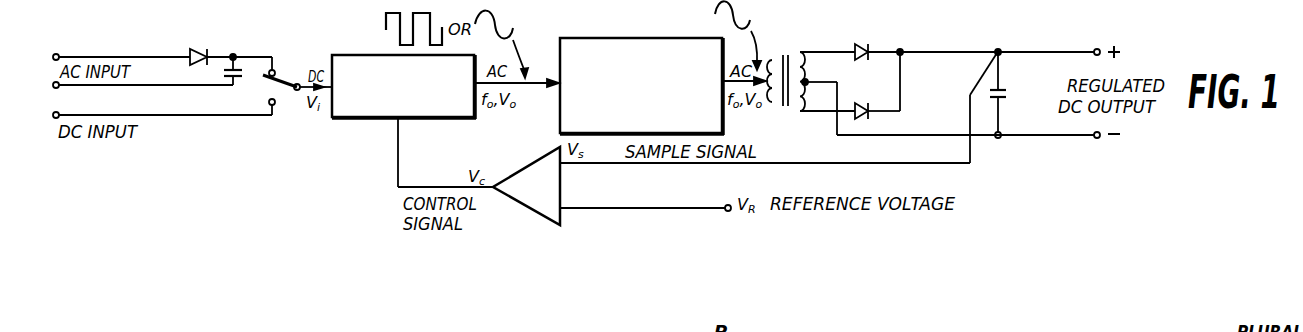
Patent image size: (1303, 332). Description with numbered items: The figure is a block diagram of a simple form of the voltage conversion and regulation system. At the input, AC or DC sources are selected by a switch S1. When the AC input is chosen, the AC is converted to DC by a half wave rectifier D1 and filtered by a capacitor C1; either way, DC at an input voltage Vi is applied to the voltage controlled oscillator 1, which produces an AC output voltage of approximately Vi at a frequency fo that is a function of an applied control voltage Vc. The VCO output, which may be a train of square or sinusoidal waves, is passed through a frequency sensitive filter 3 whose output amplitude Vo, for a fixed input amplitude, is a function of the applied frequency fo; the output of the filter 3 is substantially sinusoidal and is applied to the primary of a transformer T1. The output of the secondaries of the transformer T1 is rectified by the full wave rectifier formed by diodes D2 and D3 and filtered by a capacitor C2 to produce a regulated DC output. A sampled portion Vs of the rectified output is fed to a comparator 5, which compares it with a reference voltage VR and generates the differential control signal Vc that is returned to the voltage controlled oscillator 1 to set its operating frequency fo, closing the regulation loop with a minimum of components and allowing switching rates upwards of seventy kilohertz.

The voltage controlled oscillator 1 is at (358, 55).
The frequency sensitive filter 3 is at (559, 43).
The comparator 5 is at (524, 172).
The half wave rectifier D1 is at (199, 47).
The capacitor C1 is at (239, 66).
The switch S1 is at (282, 81).
The transformer T1 is at (794, 33).
The full wave rectifier diode D2 is at (862, 44).
The full wave rectifier diode D3 is at (863, 103).
The capacitor C2 is at (1005, 91).